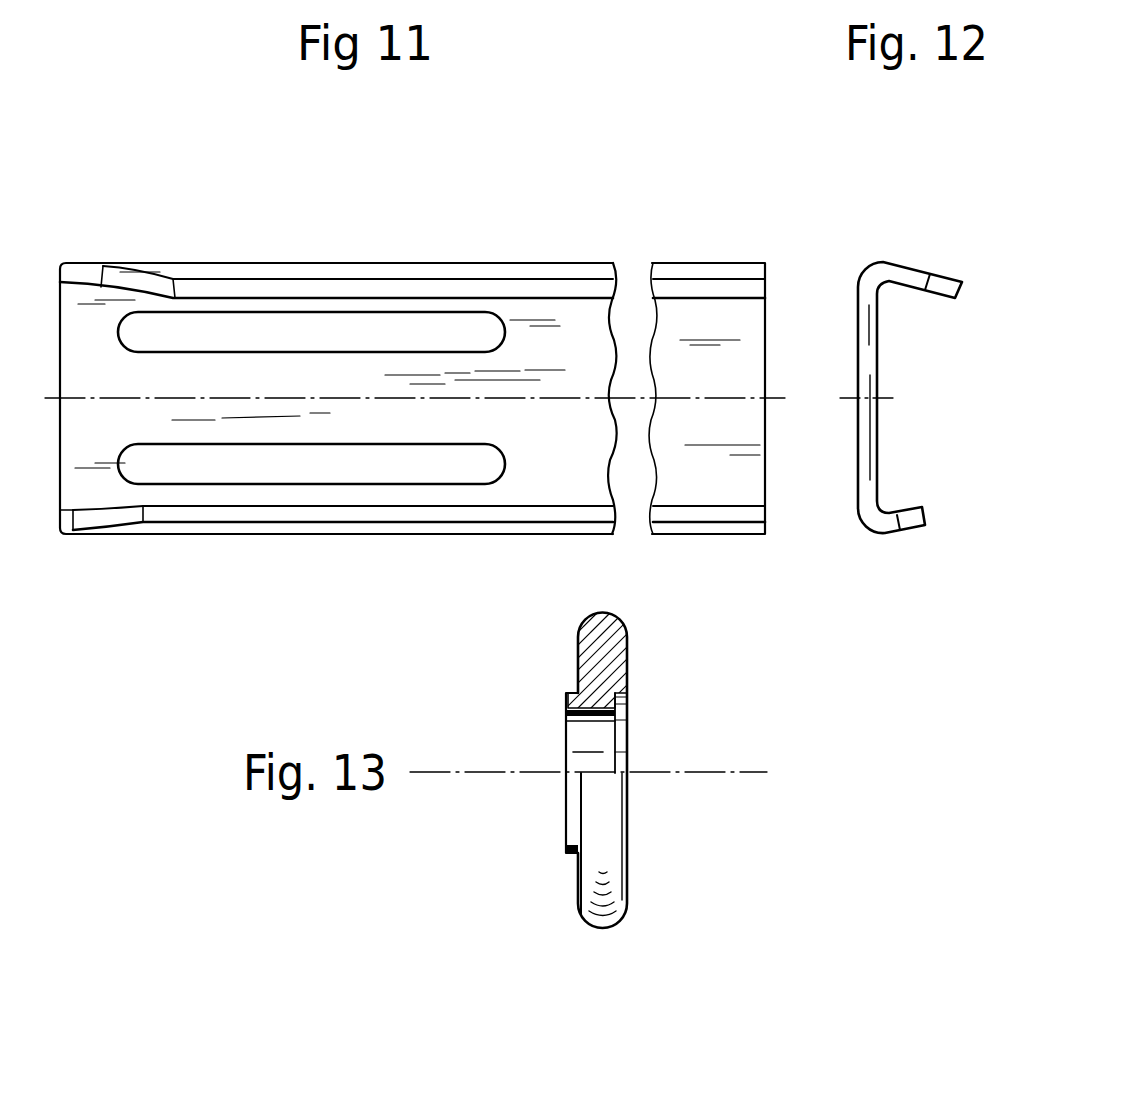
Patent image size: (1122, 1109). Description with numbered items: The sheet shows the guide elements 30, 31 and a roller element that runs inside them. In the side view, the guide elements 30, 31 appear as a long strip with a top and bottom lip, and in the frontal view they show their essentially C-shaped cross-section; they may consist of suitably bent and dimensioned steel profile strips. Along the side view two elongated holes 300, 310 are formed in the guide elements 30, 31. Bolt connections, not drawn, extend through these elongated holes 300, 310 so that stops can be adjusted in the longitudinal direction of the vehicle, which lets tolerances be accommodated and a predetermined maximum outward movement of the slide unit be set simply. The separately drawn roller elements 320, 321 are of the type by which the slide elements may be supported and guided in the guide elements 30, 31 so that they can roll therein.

In FIG. 11, the guide element 30 is at (412, 389).
In FIG. 12, the guide element 30 is at (971, 397).
In FIG. 11, the guide element 31 is at (412, 389).
In FIG. 12, the guide element 31 is at (877, 340).
In FIG. 11, the elongated hole 300 is at (262, 333).
In FIG. 11, the elongated hole 310 is at (273, 472).
In FIG. 13, the roller element 320 is at (673, 771).
In FIG. 13, the roller element 321 is at (607, 823).